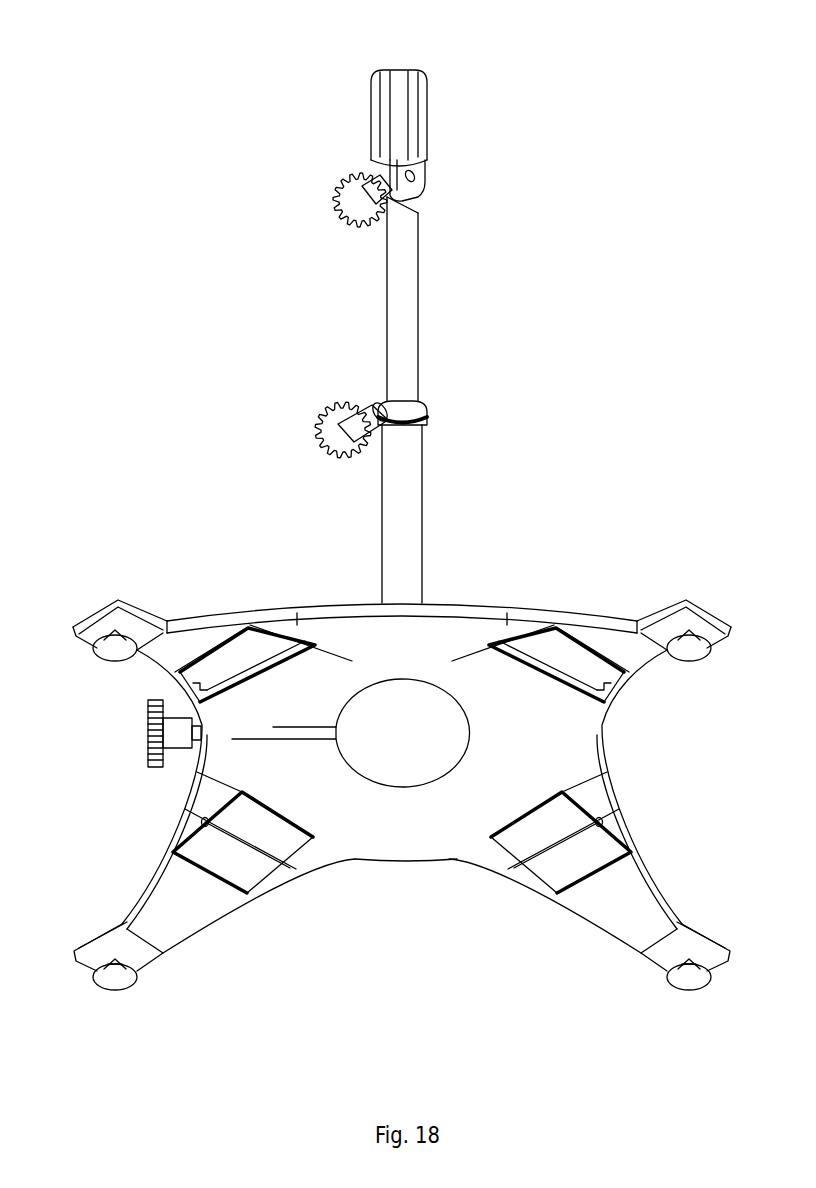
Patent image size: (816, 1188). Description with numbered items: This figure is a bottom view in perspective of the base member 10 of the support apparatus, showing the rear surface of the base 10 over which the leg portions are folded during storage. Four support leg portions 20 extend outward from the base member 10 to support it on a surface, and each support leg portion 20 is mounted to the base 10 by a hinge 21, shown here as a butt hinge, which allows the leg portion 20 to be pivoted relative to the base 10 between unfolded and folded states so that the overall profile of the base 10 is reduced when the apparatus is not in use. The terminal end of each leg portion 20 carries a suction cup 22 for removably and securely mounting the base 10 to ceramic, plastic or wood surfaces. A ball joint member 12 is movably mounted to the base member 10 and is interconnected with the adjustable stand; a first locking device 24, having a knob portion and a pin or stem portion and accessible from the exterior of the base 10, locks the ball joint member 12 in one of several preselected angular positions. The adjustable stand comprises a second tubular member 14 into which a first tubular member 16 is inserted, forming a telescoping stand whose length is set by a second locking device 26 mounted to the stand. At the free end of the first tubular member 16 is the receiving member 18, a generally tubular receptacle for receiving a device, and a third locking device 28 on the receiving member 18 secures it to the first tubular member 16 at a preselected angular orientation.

The base member 10 is at (393, 820).
The ball joint member 12 is at (424, 733).
The second tubular member 14 is at (422, 478).
The first tubular member 16 is at (420, 243).
The receiving member 18 is at (428, 110).
The support leg portion 20 is at (203, 613).
The hinge 21 is at (238, 653).
The suction cup 22 is at (688, 982).
The locking device 24 is at (148, 745).
The locking device 26 is at (318, 410).
The locking device 28 is at (340, 180).